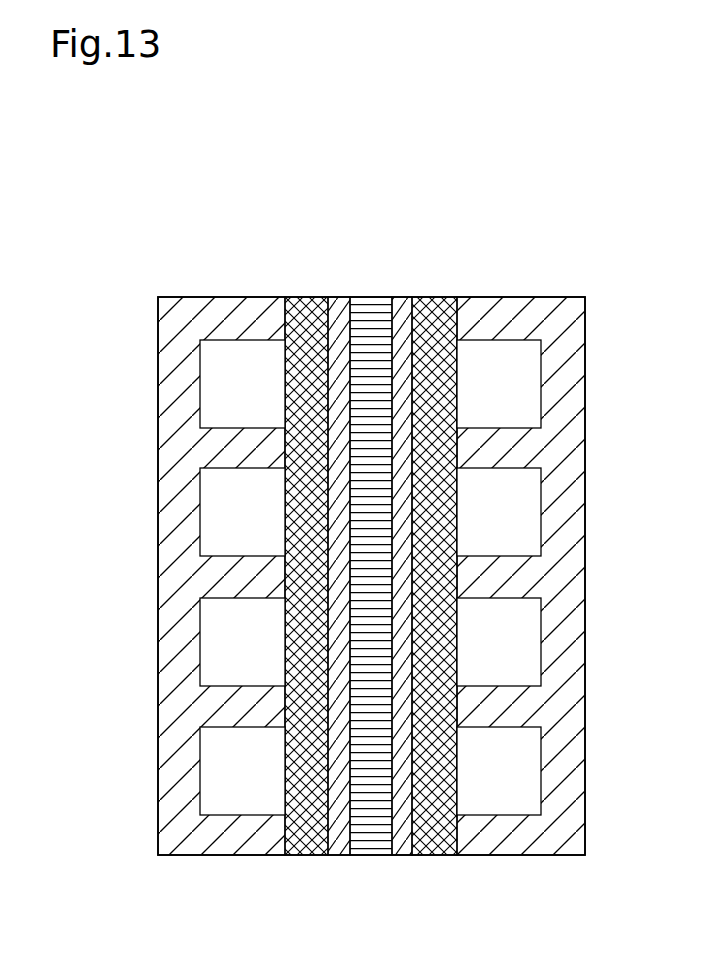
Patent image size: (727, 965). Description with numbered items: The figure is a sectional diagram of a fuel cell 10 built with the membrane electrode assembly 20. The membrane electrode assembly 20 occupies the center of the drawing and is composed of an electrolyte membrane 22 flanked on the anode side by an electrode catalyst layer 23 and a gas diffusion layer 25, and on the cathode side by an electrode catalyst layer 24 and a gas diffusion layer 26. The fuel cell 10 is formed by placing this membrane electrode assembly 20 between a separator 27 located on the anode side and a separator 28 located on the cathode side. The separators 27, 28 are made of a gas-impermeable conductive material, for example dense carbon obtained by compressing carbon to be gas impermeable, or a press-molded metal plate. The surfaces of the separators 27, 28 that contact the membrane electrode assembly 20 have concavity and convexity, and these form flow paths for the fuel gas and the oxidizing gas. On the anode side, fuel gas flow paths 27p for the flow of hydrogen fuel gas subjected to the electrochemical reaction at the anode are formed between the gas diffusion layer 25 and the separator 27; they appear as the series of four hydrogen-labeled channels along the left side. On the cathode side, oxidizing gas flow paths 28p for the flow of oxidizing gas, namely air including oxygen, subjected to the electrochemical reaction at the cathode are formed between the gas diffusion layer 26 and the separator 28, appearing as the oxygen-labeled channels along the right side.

The fuel cell 10 is at (557, 208).
The membrane electrode assembly 20 is at (457, 244).
The electrolyte membrane 22 is at (371, 297).
The electrode catalyst layer 23 is at (337, 297).
The electrode catalyst layer 24 is at (404, 297).
The gas diffusion layer 25 is at (309, 297).
The gas diffusion layer 26 is at (437, 297).
The separator 27 is at (214, 297).
The separator 28 is at (522, 297).
The fuel gas flow paths 27p is at (215, 672).
The oxidizing gas flow paths 28p is at (525, 672).